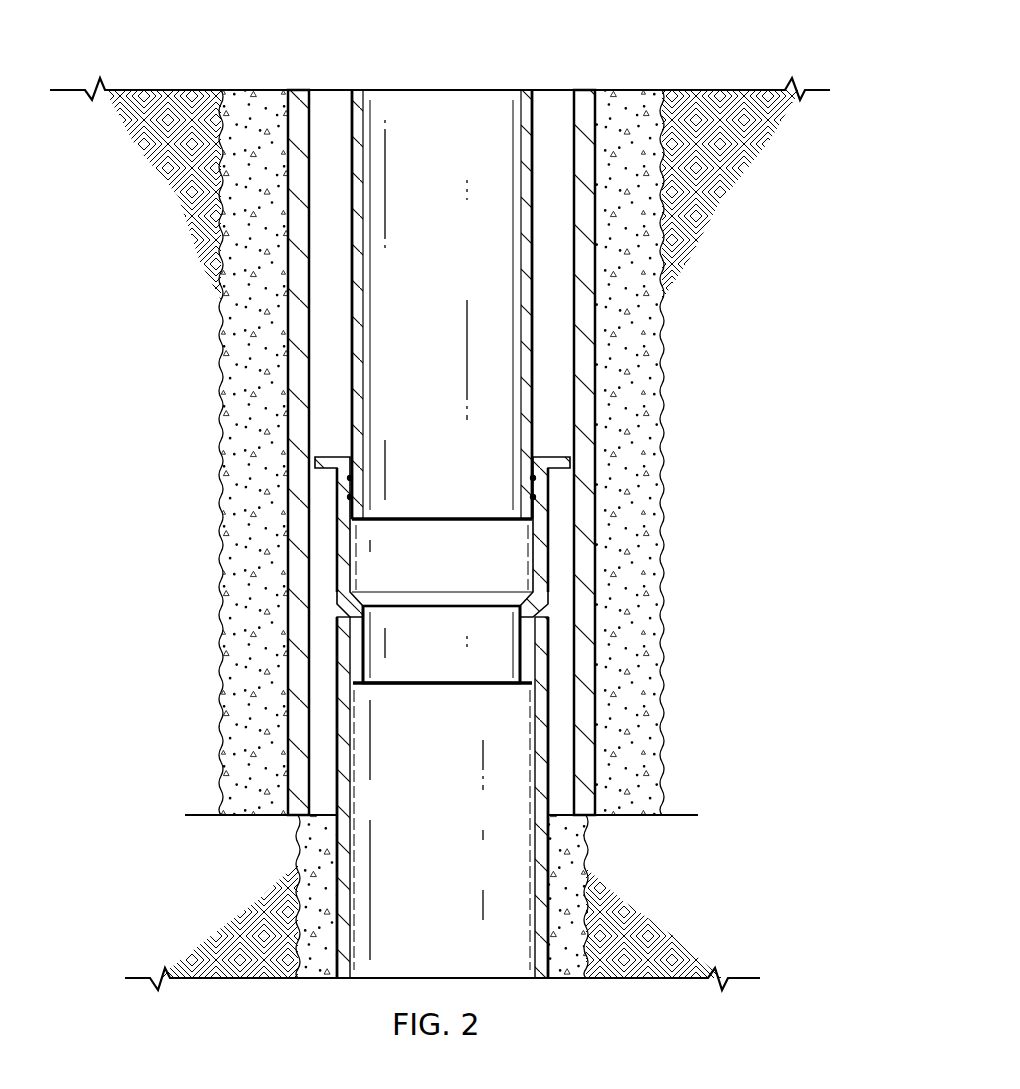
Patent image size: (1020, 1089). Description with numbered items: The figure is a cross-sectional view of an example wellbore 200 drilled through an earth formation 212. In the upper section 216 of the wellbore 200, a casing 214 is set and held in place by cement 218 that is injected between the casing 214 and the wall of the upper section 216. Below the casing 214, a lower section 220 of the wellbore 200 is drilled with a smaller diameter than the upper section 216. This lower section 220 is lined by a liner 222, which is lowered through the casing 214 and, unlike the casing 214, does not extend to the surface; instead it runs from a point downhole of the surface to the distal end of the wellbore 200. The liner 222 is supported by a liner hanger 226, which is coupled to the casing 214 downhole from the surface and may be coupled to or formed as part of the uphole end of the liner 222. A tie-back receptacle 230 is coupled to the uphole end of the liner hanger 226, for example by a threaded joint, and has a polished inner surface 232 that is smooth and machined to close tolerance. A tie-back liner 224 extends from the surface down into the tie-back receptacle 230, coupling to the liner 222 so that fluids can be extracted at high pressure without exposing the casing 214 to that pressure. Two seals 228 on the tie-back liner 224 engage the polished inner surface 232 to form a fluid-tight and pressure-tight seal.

The wellbore 200 is at (640, 56).
The earth formation 212 is at (748, 467).
The casing 214 is at (585, 340).
The upper section 216 is at (200, 437).
The cement 218 is at (578, 878).
The lower section 220 is at (277, 893).
The liner 222 is at (545, 848).
The tie-back liner 224 is at (357, 283).
The liner hanger 226 is at (553, 657).
The seals 228 is at (535, 497).
The tie-back receptacle 230 is at (537, 547).
The polished inner surface 232 is at (350, 545).